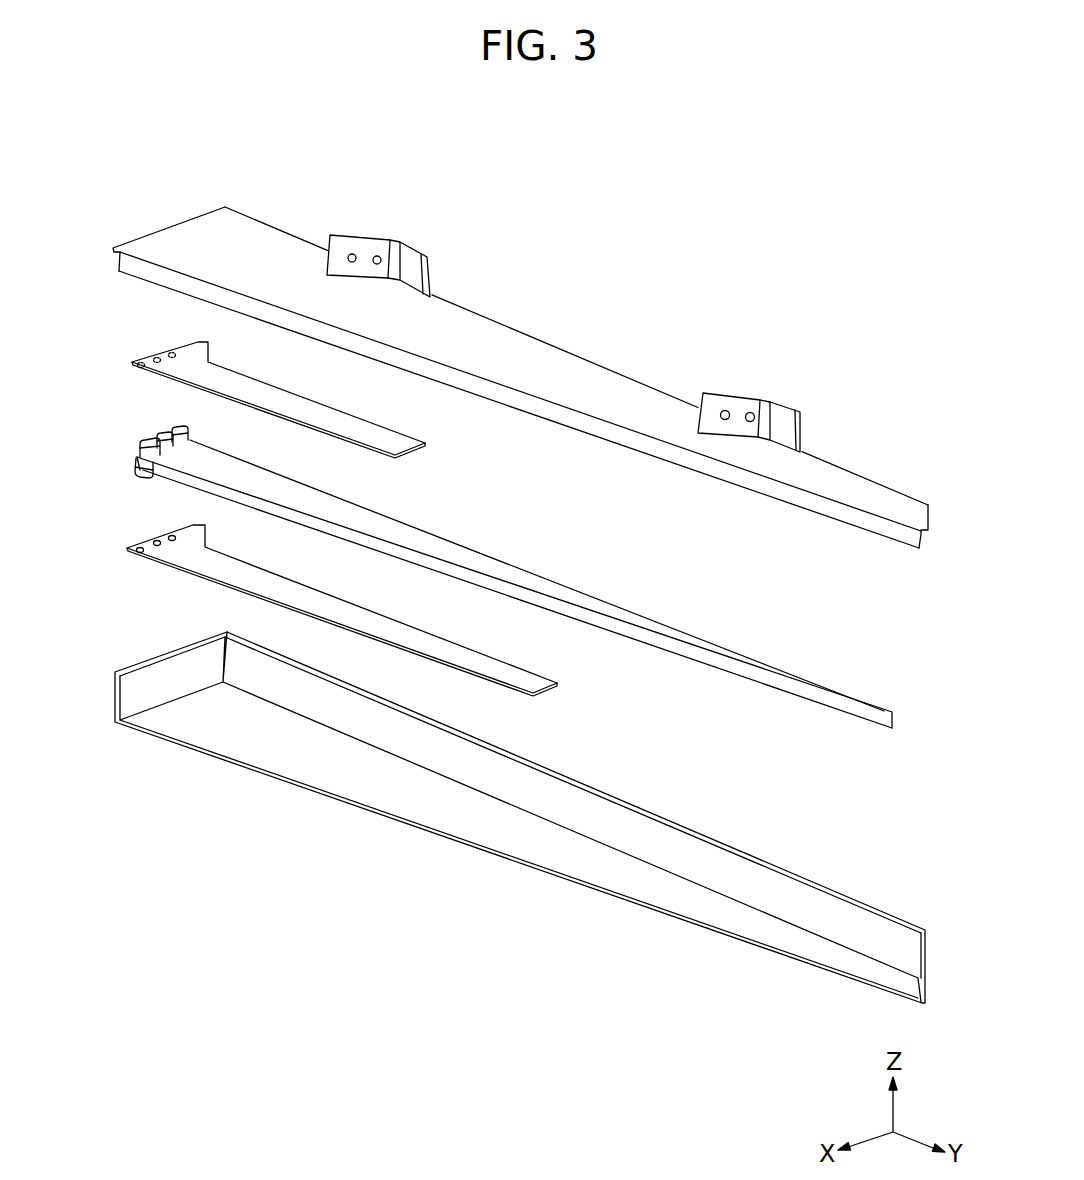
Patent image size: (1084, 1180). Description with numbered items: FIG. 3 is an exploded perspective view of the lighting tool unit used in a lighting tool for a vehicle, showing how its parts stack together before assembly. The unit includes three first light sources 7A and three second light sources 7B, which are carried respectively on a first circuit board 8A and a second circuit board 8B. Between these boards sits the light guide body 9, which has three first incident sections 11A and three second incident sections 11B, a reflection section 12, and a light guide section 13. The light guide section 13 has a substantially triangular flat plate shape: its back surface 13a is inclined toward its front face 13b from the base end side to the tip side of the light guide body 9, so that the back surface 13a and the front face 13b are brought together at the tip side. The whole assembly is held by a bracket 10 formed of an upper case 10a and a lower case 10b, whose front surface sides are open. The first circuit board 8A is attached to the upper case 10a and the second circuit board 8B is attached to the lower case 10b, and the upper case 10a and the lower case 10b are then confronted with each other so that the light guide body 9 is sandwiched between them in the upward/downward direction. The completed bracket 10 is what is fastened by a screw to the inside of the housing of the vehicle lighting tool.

The bracket 10 is at (484, 564).
The upper case 10a is at (142, 236).
The lower case 10b is at (137, 664).
The first light sources 7A is at (153, 357).
The second light sources 7B is at (153, 540).
The first circuit board 8A is at (410, 452).
The second circuit board 8B is at (547, 688).
The light guide body 9 is at (900, 699).
The light guide section 13 is at (593, 598).
The back surface 13a is at (690, 634).
The front face 13b is at (695, 653).
The first incident sections 11A is at (152, 438).
The second incident sections 11B is at (150, 479).
The reflection section 12 is at (140, 450).